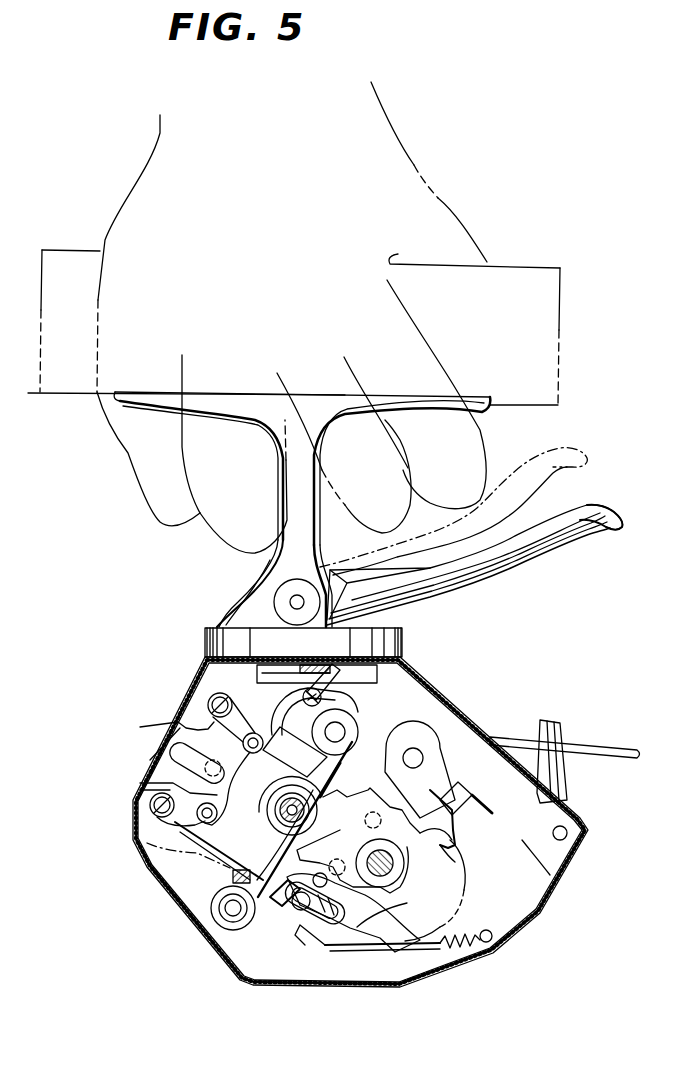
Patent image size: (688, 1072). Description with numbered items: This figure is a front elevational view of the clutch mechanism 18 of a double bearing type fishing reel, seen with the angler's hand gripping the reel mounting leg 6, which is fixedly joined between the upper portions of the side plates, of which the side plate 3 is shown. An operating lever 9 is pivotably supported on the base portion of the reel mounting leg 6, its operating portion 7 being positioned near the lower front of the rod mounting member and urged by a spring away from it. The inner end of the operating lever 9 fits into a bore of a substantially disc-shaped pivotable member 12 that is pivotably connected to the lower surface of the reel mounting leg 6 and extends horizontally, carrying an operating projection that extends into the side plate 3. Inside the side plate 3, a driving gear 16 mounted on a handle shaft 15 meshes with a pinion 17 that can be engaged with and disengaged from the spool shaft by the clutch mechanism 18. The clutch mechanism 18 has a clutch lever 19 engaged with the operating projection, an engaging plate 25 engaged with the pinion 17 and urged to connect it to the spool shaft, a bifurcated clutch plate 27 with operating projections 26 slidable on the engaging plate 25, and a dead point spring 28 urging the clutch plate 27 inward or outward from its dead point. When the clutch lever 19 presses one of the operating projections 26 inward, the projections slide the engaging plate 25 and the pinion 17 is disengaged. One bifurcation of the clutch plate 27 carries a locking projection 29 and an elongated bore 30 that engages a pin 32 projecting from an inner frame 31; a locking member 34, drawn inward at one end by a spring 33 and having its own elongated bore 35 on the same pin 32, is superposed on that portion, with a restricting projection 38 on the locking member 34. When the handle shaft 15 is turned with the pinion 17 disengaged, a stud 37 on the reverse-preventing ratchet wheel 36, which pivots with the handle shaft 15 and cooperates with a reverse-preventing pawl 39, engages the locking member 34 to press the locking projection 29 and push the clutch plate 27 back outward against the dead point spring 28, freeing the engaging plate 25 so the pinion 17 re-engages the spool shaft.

The side plate 3 is at (447, 701).
The reel mounting leg 6 is at (290, 527).
The operating portion 7 is at (609, 509).
The operating lever 9 is at (494, 549).
The pivotable member 12 is at (280, 670).
The handle shaft 15 is at (450, 840).
The driving gear 16 is at (462, 905).
The pinion 17 is at (318, 793).
The clutch mechanism 18 is at (196, 870).
The clutch lever 19 is at (283, 707).
The engaging plate 25 is at (247, 885).
The operating projections 26 is at (307, 753).
The clutch plate 27 is at (175, 726).
The dead point spring 28 is at (183, 787).
The locking projection 29 is at (147, 843).
The elongated bore 30 is at (287, 890).
The inner frame 31 is at (522, 840).
The pin 32 is at (300, 920).
The spring 33 is at (450, 950).
The locking member 34 is at (390, 907).
The elongated bore 35 is at (340, 970).
The reverse-preventing ratchet wheel 36 is at (450, 843).
The stud 37 is at (383, 827).
The restricting projection 38 is at (290, 917).
The reverse-preventing pawl 39 is at (433, 792).